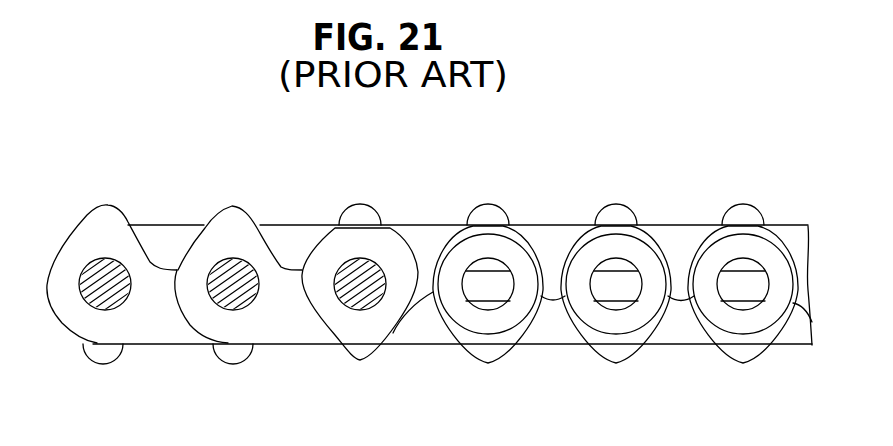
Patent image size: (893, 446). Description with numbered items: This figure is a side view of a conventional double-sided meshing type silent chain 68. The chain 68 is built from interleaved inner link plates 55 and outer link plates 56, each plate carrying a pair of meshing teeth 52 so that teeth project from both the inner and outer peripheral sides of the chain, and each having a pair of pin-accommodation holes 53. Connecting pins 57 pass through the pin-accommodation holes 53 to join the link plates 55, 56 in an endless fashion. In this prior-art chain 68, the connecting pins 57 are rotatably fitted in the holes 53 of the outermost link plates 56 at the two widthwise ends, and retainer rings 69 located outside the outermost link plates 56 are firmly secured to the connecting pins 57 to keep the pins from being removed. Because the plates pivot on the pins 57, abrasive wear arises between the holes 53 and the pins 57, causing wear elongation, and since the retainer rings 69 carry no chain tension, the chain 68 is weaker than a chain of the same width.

The double-sided meshing type silent chain 68 is at (519, 196).
The retainer ring 69 is at (523, 260).
The meshing teeth 52 is at (234, 216).
The pin-accommodation hole 53 is at (248, 305).
The inner link plate 55 is at (157, 333).
The outer link plate 56 is at (294, 233).
The connecting pin 57 is at (212, 270).